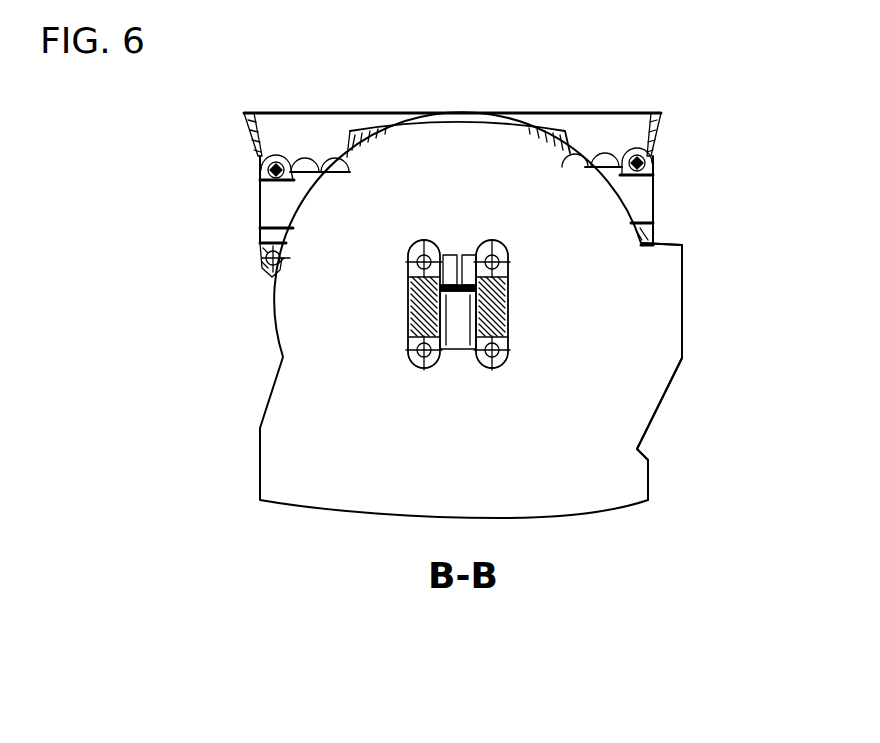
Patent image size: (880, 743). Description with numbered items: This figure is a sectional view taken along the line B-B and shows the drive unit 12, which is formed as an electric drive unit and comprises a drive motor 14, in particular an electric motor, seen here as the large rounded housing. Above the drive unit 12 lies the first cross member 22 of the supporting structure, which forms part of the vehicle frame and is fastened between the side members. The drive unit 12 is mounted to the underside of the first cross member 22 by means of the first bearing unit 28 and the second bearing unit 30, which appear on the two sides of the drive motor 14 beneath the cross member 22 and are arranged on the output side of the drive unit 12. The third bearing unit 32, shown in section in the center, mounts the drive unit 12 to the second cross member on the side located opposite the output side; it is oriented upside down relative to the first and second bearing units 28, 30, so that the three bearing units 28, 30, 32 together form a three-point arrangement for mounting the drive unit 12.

The drive unit 12 is at (202, 357).
The drive motor 14 is at (668, 350).
The first cross member 22 is at (285, 145).
The first bearing unit 28 is at (645, 197).
The second bearing unit 30 is at (280, 190).
The third bearing unit 32 is at (508, 313).